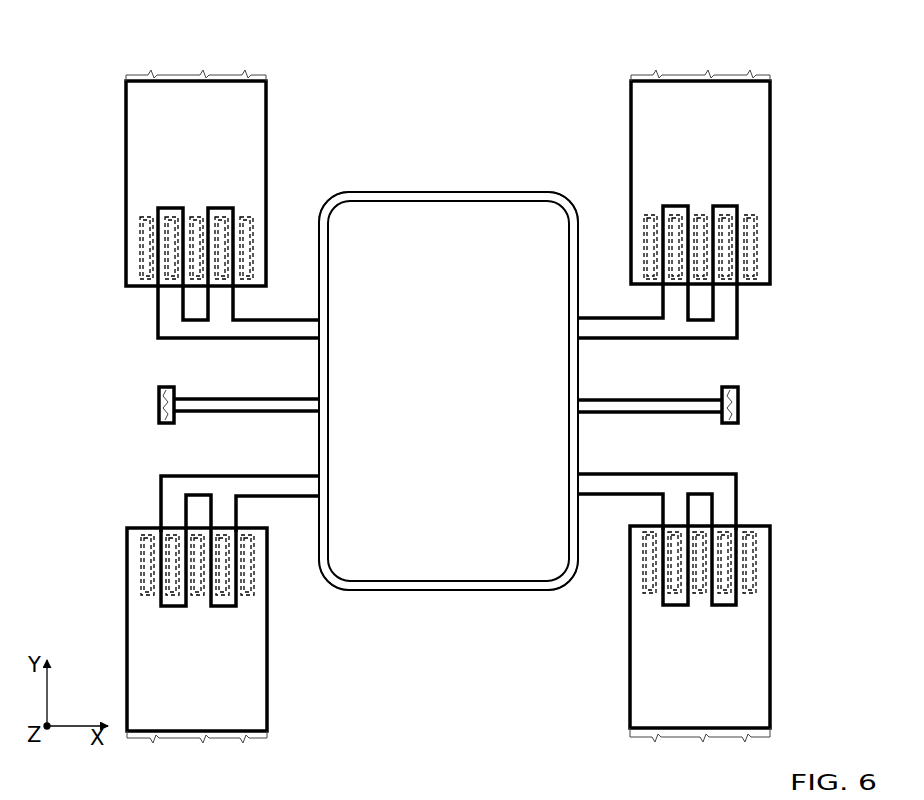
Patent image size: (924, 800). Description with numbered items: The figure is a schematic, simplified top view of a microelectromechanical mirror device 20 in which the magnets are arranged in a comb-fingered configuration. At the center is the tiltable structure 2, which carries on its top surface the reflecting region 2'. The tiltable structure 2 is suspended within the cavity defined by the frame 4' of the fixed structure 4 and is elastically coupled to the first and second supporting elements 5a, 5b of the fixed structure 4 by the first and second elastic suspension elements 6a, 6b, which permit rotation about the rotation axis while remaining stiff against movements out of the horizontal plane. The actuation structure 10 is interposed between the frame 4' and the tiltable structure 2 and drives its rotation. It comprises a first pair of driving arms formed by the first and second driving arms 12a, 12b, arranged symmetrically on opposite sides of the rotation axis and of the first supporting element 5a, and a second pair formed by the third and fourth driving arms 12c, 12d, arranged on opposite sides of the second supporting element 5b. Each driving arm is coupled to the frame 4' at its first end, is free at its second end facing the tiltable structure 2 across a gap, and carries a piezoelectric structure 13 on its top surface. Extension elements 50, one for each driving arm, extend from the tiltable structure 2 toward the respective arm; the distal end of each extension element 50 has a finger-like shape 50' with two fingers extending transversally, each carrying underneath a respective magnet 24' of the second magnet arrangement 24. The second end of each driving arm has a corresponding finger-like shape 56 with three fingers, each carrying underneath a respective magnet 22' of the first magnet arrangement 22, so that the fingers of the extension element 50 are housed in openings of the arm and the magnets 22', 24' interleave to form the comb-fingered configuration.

The tiltable structure 2 is at (448, 352).
The reflecting region 2' is at (448, 391).
The fixed structure 4 is at (177, 46).
The frame 4' is at (448, 385).
The first supporting element 5a is at (160, 388).
The second supporting element 5b is at (740, 403).
The first elastic suspension element 6a is at (238, 338).
The second elastic suspension element 6b is at (697, 390).
The actuation structure 10 is at (122, 97).
The first driving arm 12a is at (210, 105).
The second driving arm 12b is at (142, 635).
The third driving arm 12c is at (762, 92).
The fourth driving arm 12d is at (748, 657).
The piezoelectric structure 13 is at (201, 159).
The microelectromechanical mirror device 20 is at (836, 130).
The first magnet arrangement 22 is at (446, 394).
The magnet of the first magnet arrangement 22' is at (451, 388).
The second magnet arrangement 24 is at (445, 228).
The magnet of the second magnet arrangement 24' is at (448, 384).
The extension element 50 is at (448, 390).
The finger-like shape of extension element 50' is at (448, 344).
The finger-like shape of driving arm 56 is at (133, 278).